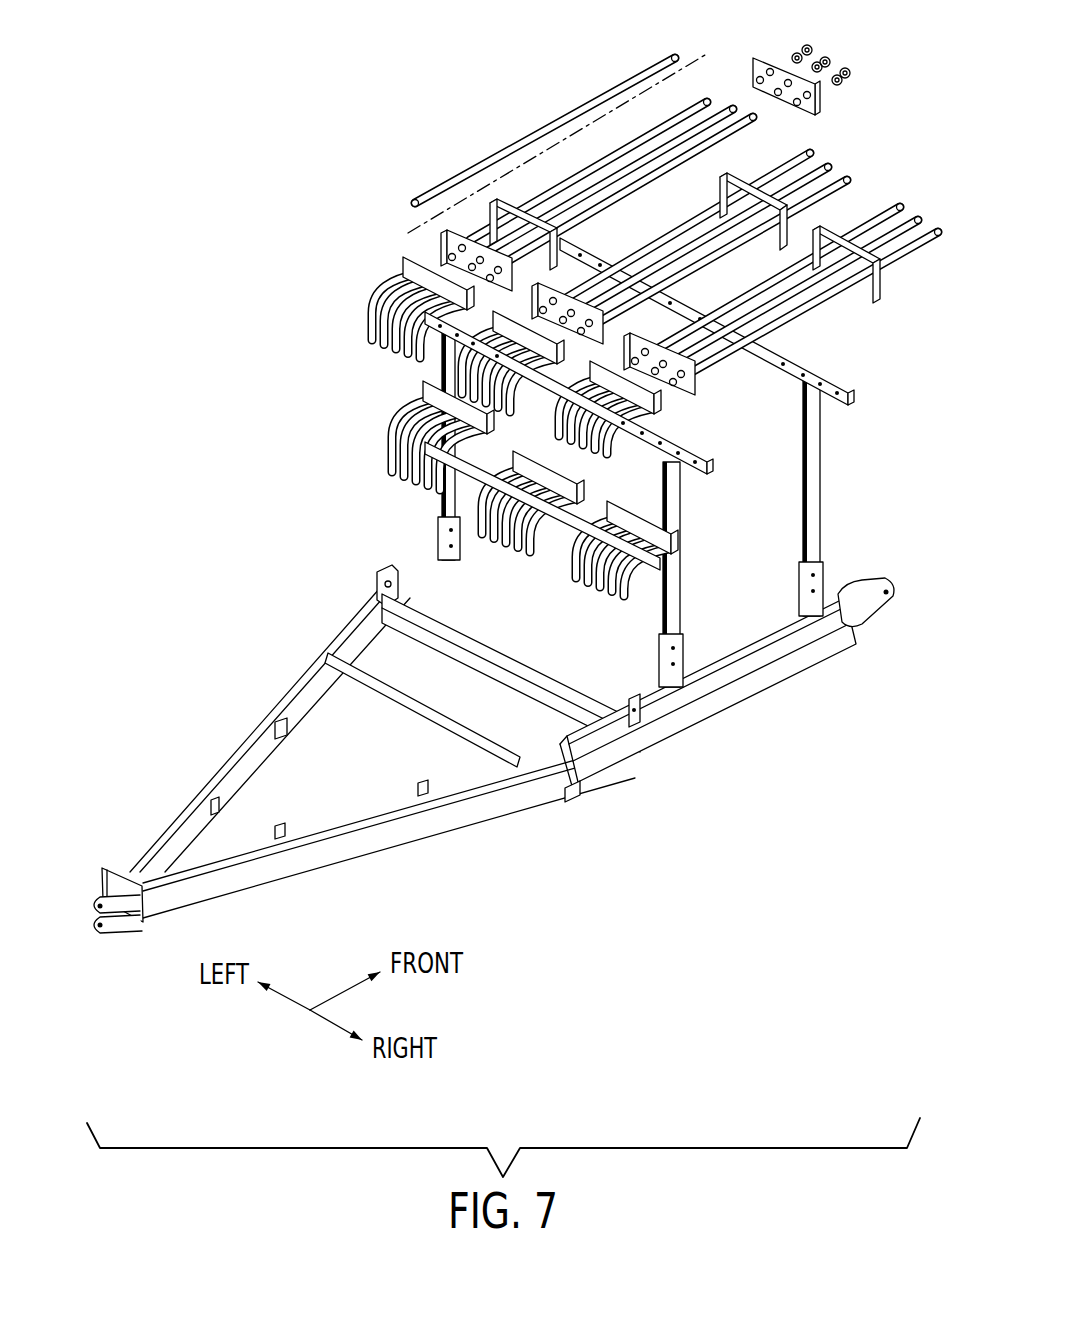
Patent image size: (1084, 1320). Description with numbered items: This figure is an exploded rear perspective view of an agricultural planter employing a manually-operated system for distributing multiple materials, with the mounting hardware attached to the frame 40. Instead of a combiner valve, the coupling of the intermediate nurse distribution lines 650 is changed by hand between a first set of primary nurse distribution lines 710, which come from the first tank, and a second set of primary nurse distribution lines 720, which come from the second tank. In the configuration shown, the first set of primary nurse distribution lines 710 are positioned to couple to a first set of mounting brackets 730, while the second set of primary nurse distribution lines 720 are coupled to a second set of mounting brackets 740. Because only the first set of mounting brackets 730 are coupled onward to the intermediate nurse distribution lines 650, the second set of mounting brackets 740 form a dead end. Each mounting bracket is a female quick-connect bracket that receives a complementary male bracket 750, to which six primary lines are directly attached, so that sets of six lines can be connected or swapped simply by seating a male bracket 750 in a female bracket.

The frame 40 is at (655, 750).
The intermediate nurse distribution lines 650 is at (798, 294).
The first set of primary nurse distribution lines 710 is at (373, 303).
The second set of primary nurse distribution lines 720 is at (408, 447).
The first set of mounting brackets 730 is at (697, 383).
The second set of mounting brackets 740 is at (672, 527).
The male brackets 750 is at (407, 270).